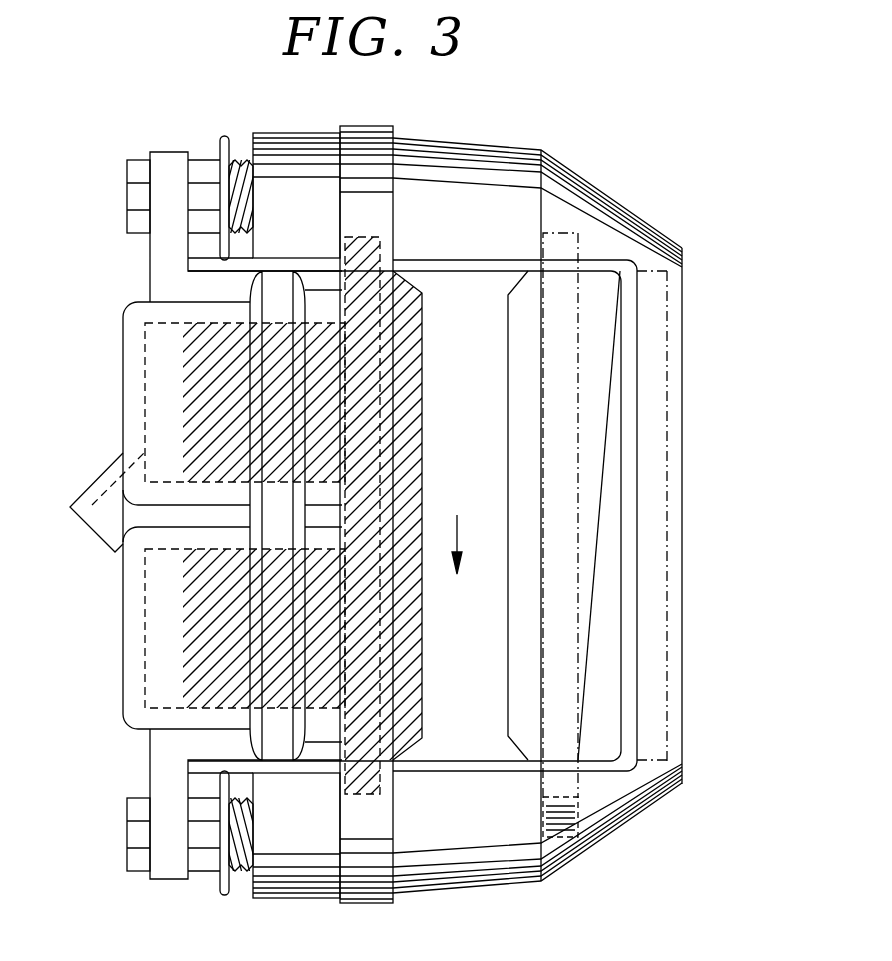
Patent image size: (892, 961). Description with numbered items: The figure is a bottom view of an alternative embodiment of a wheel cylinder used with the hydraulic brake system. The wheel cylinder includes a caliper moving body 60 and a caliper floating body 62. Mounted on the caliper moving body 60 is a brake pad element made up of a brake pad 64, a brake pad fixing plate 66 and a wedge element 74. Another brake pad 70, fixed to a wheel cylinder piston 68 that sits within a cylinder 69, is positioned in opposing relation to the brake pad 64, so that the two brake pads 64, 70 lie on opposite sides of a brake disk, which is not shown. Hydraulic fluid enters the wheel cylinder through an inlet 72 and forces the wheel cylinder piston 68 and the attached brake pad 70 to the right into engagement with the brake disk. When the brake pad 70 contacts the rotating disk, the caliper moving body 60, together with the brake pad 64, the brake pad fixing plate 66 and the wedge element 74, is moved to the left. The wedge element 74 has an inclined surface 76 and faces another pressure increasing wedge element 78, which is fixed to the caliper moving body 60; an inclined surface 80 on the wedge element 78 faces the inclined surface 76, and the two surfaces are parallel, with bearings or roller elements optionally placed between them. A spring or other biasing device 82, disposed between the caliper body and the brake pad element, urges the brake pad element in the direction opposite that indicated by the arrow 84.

The caliper moving body 60 is at (165, 160).
The caliper floating body 62 is at (437, 158).
The brake pad 64 is at (530, 733).
The brake pad fixing plate 66 is at (562, 292).
The wheel cylinder piston 68 is at (195, 670).
The cylinder 69 is at (163, 325).
The brake pad 70 is at (417, 692).
The inlet 72 is at (88, 535).
The wedge element 74 is at (595, 303).
The inclined surface 76 is at (599, 487).
The pressure increasing wedge element 78 is at (598, 725).
The inclined surface 80 is at (585, 528).
The biasing device 82 is at (582, 826).
The arrow 84 is at (457, 527).